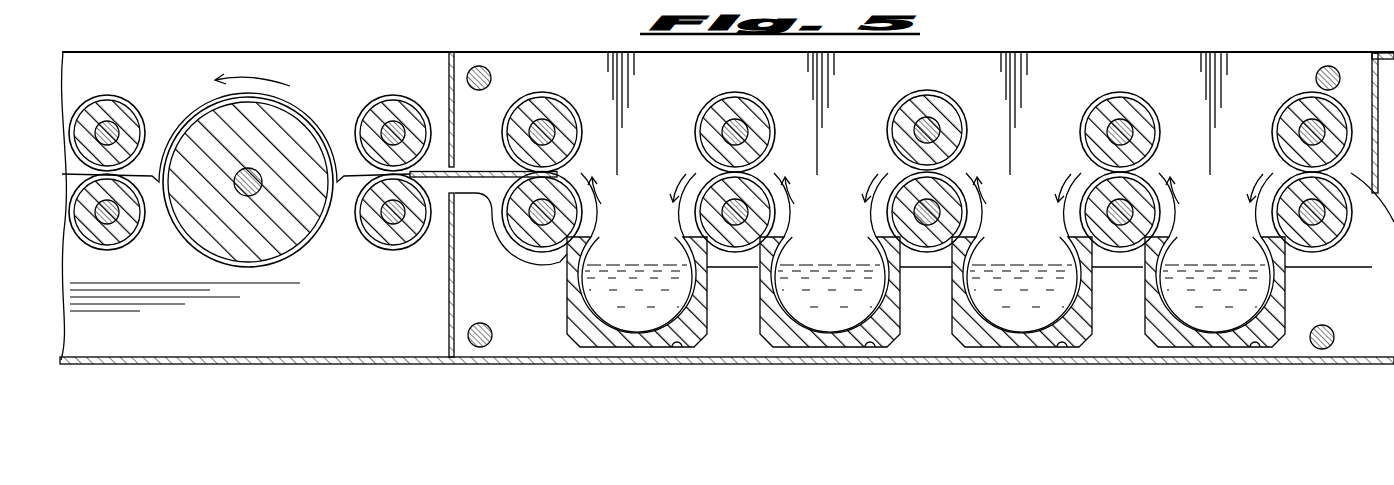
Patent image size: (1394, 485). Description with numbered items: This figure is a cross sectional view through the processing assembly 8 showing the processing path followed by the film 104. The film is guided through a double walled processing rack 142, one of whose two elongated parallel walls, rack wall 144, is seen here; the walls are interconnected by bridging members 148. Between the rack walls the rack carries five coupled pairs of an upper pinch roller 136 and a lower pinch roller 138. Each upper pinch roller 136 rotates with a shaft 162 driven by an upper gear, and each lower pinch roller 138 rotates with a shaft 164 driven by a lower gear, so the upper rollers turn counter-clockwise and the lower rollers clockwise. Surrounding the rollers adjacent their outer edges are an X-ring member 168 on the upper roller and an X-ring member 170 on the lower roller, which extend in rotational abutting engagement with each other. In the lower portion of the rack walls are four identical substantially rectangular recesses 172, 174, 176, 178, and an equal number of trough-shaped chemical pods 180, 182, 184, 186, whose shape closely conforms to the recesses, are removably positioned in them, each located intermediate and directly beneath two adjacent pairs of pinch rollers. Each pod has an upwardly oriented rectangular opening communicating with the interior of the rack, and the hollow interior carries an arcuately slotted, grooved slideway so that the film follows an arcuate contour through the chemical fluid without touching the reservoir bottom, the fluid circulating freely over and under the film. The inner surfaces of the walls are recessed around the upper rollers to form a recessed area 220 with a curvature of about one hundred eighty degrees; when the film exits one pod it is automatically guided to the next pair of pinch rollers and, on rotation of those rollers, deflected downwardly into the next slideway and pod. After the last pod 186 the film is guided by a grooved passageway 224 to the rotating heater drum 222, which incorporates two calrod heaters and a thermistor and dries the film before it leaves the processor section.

The processing assembly 8 is at (1083, 48).
The film 104 is at (307, 115).
The heater drum 222 is at (200, 127).
The bridging members 148 is at (480, 66).
The rack wall 144 is at (572, 60).
The grooved passageway 224 is at (476, 178).
The upper pinch roller 136 is at (1093, 96).
The X-ring member 168 is at (900, 106).
The shaft 162 is at (893, 122).
The lower pinch roller 138 is at (1088, 225).
The shaft 164 is at (938, 214).
The X-ring member 170 is at (884, 212).
The recessed area 220 is at (1163, 225).
The processing rack 142 is at (1220, 56).
The recess 178 is at (637, 314).
The recess 176 is at (830, 314).
The recess 174 is at (1022, 314).
The recess 172 is at (1215, 314).
The chemical pod 186 is at (637, 272).
The chemical pod 184 is at (830, 272).
The chemical pod 182 is at (1022, 272).
The chemical pod 180 is at (1215, 272).